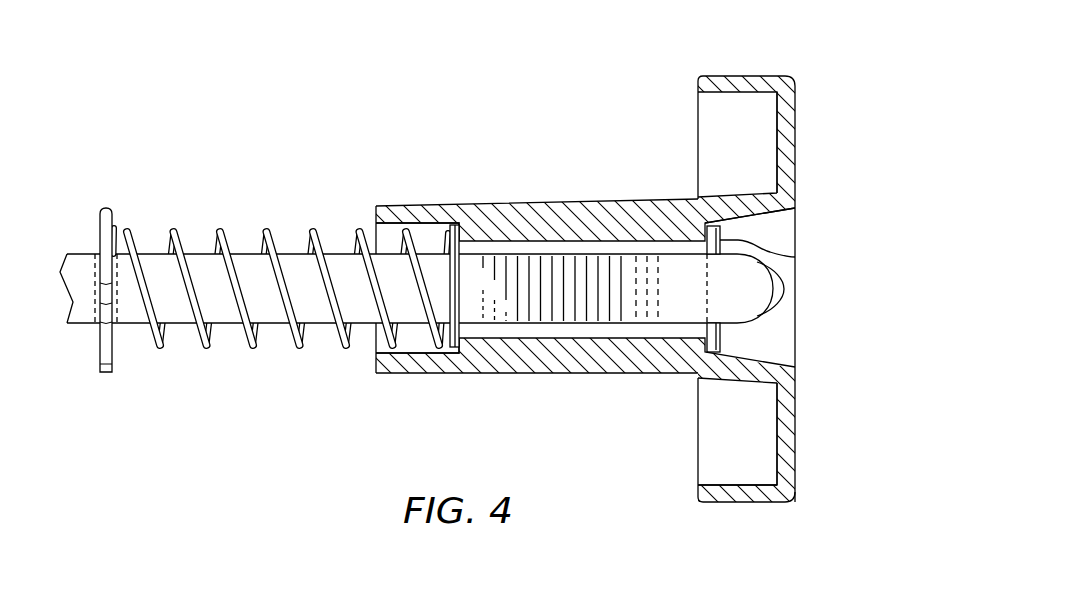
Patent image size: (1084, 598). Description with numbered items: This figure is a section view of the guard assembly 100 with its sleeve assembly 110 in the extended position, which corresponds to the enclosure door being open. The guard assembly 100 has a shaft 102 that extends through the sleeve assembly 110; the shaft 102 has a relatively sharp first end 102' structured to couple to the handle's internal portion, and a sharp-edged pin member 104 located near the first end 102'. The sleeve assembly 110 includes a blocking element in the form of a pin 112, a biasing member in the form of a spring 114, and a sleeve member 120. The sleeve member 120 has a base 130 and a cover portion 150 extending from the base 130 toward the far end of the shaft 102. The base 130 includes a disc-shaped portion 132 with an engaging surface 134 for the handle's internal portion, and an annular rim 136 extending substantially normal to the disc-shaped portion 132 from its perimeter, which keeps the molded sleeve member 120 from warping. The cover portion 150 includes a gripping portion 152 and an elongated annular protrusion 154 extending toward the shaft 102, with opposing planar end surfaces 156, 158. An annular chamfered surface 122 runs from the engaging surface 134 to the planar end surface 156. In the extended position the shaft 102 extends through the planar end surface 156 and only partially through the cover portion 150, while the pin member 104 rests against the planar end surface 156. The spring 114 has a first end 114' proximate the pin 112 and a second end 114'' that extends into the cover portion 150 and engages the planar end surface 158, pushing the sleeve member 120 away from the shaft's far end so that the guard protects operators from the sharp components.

The guard assembly 100 is at (525, 107).
The shaft 102 is at (398, 340).
The first end 102' is at (795, 299).
The pin member 104 is at (795, 257).
The sleeve assembly 110 is at (400, 168).
The pin 112 is at (97, 350).
The spring 114 is at (304, 249).
The first end 114' is at (147, 251).
The second end 114'' is at (440, 322).
The sleeve member 120 is at (770, 257).
The annular chamfered surface 122 is at (770, 209).
The base 130 is at (745, 456).
The disc-shaped portion 132 is at (799, 511).
The engaging surface 134 is at (795, 117).
The annular rim 136 is at (724, 507).
The cover portion 150 is at (556, 265).
The gripping portion 152 is at (536, 373).
The annular protrusion 154 is at (646, 247).
The planar end surface 156 is at (721, 352).
The planar end surface 158 is at (449, 227).